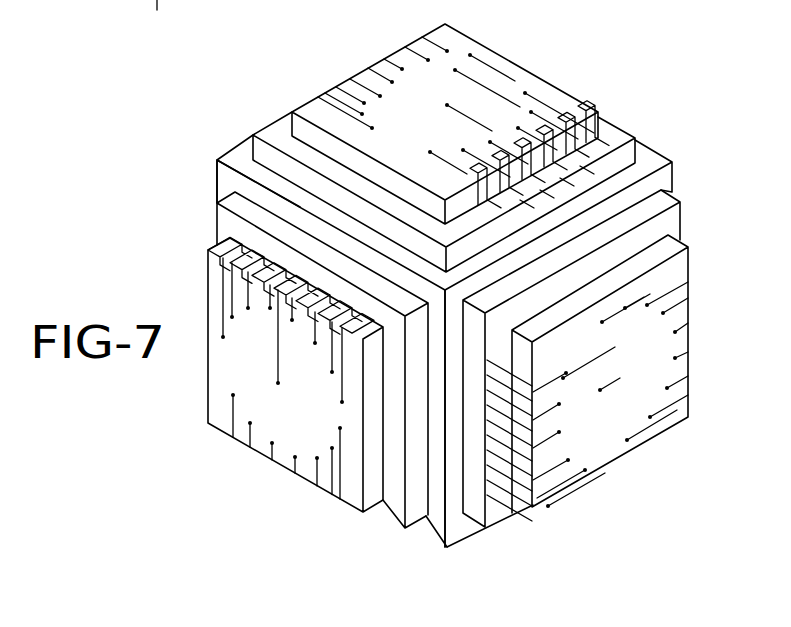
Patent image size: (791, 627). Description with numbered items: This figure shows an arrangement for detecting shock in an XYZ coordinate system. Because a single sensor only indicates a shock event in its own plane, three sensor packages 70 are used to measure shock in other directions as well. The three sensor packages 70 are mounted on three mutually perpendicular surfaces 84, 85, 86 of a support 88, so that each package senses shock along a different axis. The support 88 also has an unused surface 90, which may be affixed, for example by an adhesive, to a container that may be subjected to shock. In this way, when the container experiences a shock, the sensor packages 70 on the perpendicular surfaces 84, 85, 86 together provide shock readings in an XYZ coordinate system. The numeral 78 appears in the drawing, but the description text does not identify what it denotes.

The sensor packages 70 is at (503, 105).
The package 78 is at (155, 18).
The surface 84 is at (648, 163).
The surface 85 is at (658, 185).
The surface 86 is at (453, 443).
The support 88 is at (438, 433).
The unused surface 90 is at (230, 183).